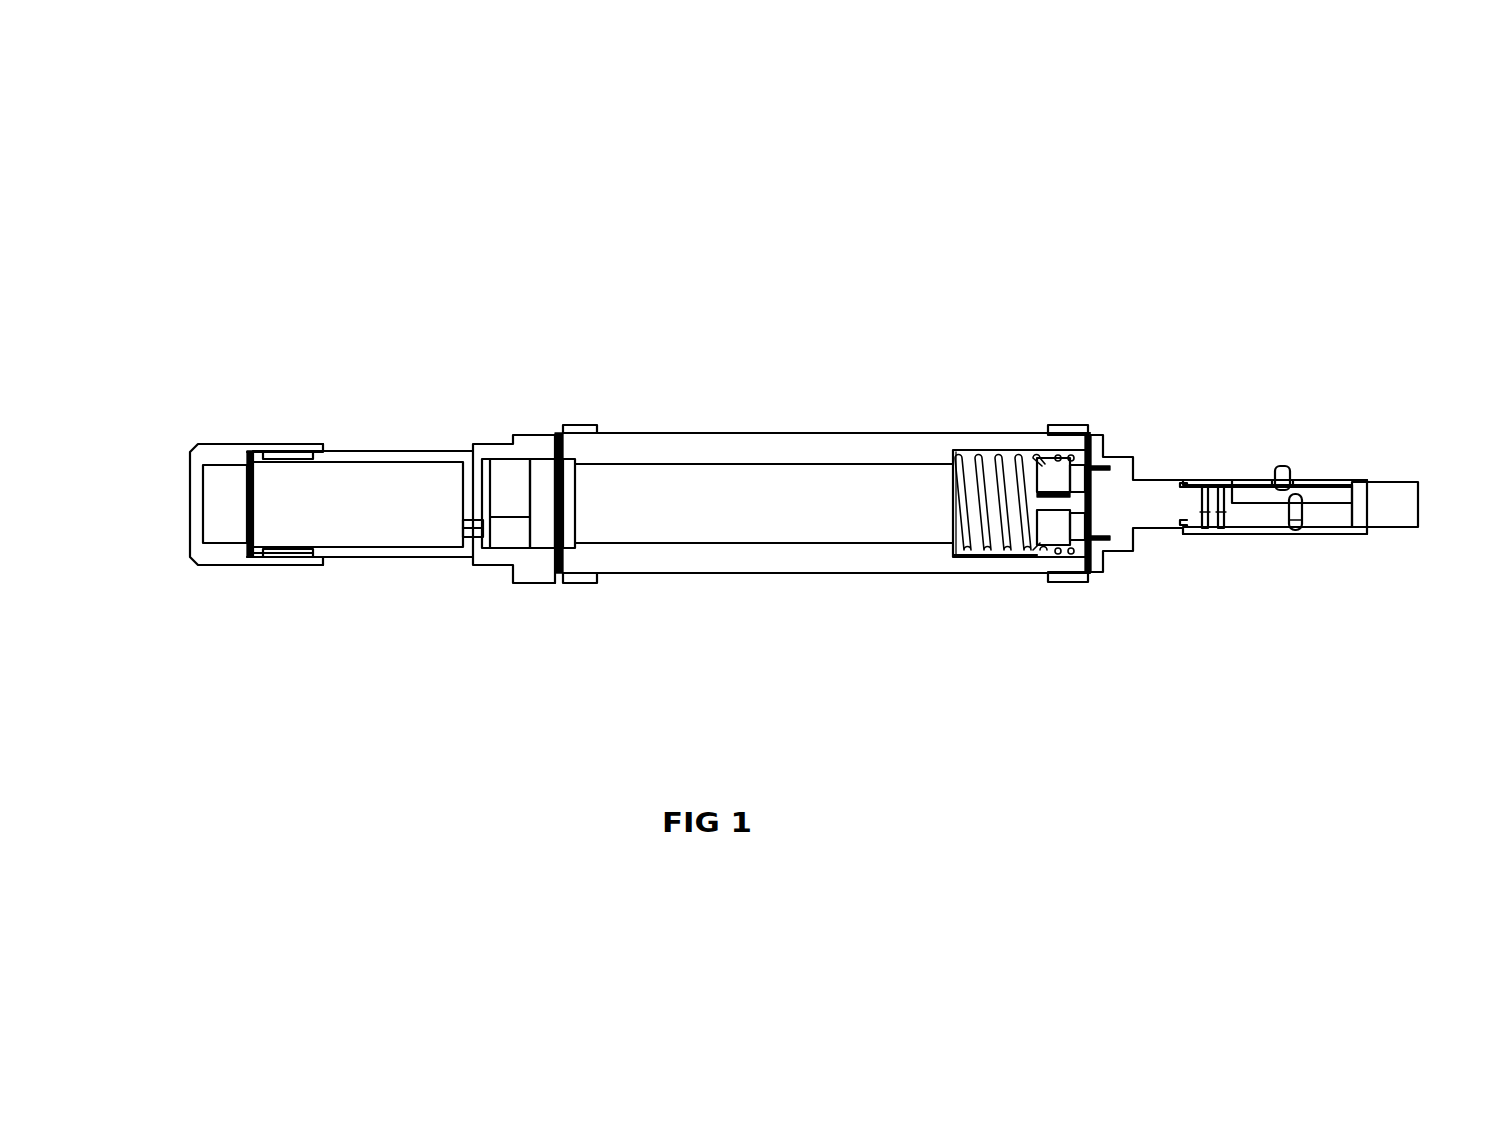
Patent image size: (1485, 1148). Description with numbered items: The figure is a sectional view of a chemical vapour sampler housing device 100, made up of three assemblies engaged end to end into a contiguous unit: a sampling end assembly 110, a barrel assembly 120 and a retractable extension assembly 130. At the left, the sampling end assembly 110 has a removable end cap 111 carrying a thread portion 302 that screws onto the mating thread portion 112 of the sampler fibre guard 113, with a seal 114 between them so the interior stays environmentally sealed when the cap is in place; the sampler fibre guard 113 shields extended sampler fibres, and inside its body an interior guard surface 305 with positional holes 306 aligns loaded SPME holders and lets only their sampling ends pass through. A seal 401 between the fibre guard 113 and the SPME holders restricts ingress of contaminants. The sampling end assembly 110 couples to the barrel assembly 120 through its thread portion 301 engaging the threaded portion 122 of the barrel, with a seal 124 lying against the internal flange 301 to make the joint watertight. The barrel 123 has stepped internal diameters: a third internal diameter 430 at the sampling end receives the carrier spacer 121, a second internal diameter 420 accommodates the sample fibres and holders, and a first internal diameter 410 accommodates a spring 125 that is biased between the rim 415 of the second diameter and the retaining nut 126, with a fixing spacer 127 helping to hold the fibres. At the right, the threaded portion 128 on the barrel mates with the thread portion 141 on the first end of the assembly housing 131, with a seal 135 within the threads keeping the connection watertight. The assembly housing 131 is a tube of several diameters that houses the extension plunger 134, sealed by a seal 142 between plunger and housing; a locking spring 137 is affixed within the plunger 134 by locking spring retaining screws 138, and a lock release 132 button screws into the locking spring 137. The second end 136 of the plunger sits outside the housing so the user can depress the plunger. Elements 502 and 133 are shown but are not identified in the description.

The housing device 100 is at (272, 260).
The sampling end assembly 110 is at (371, 685).
The end cap 111 is at (153, 448).
The mating thread portion 112 is at (280, 448).
The sampler fibre guard 113 is at (373, 450).
The seal 114 is at (245, 513).
The thread portion 302 is at (290, 553).
The guard surface 305 is at (473, 485).
The positional holes 306 is at (467, 527).
The seal 401 is at (483, 530).
The third internal diameter 430 is at (545, 488).
The seal 124 is at (533, 583).
The thread portion / internal flange 301 is at (572, 587).
The barrel assembly 120 is at (705, 398).
The carrier spacer 121 is at (567, 470).
The threaded portion 122 is at (577, 425).
The barrel 123 is at (627, 453).
The second internal diameter 420 is at (833, 462).
The first internal diameter 410 is at (990, 447).
The rim 415 is at (953, 465).
The spring 125 is at (985, 555).
The retaining nut 126 is at (1077, 503).
The fixing spacer 127 is at (1058, 477).
The thread portion 141 is at (1075, 437).
The threaded portion 128 is at (1075, 558).
The retractable extension assembly 130 is at (1190, 628).
The assembly housing 131 is at (1127, 560).
The seal 135 is at (1098, 443).
The seal 142 is at (1190, 520).
The locking spring 137 is at (1253, 497).
The locking spring retaining screws 138 is at (1233, 528).
The lock release 132 is at (1280, 484).
The extension plunger 134 is at (1372, 512).
The upper pin 502 is at (1322, 500).
The lower pin 133 is at (1300, 528).
The second end 136 is at (1418, 515).